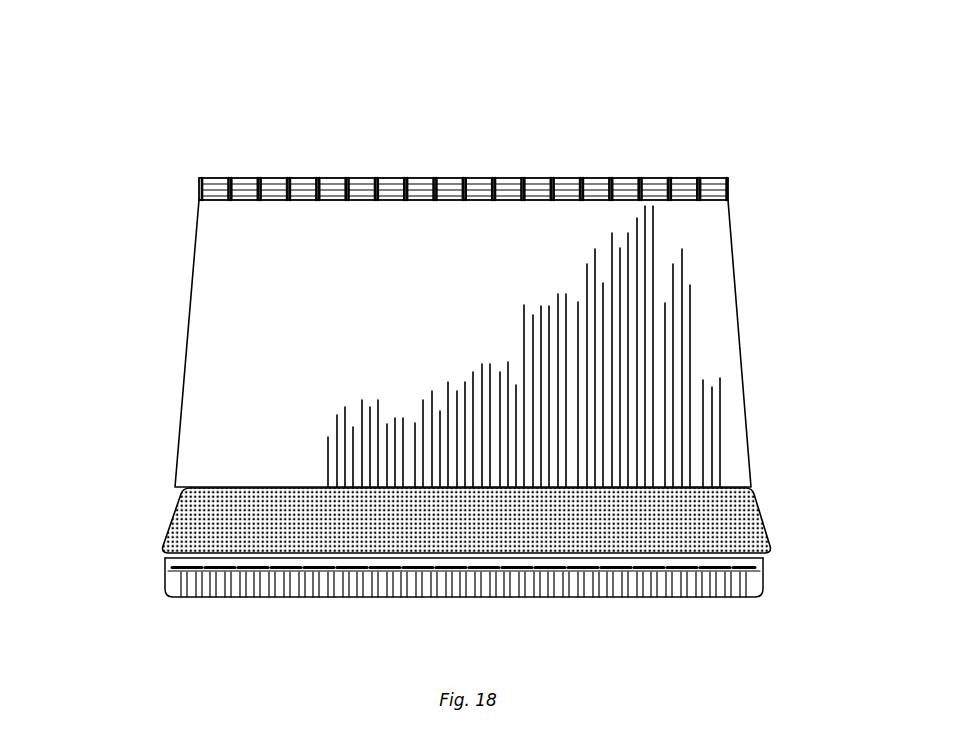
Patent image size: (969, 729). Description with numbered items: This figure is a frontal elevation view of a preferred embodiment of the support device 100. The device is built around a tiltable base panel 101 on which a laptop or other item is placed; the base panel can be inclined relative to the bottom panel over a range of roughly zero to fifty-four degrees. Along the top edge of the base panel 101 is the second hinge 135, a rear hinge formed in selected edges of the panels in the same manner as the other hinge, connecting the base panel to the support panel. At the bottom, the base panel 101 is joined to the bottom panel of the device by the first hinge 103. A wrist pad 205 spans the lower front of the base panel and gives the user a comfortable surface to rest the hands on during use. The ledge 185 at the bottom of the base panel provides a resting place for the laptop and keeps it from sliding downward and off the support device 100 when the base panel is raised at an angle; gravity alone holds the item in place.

The support device 100 is at (137, 100).
The base panel 101 is at (210, 427).
The second hinge 135 is at (415, 178).
The wrist pad 205 is at (190, 530).
The ledge 185 is at (755, 560).
The first hinge 103 is at (196, 572).